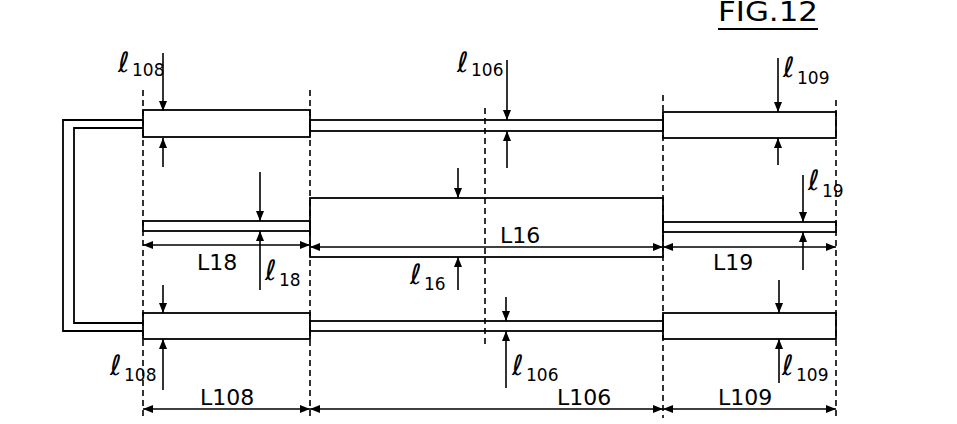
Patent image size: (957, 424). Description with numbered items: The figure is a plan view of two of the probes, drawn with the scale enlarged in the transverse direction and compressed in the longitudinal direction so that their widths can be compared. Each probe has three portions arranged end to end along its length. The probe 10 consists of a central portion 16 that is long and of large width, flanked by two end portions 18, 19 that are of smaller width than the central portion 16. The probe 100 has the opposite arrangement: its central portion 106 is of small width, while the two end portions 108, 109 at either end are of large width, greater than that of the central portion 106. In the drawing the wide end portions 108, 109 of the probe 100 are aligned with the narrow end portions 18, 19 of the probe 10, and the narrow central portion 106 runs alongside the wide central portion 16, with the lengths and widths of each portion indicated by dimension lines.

The probe 100 is at (563, 112).
The end portion 108 is at (238, 106).
The central portion 106 is at (428, 114).
The end portion 109 is at (723, 108).
The probe 10 is at (603, 191).
The central portion 16 is at (420, 155).
The end portion 18 is at (206, 213).
The end portion 19 is at (723, 213).